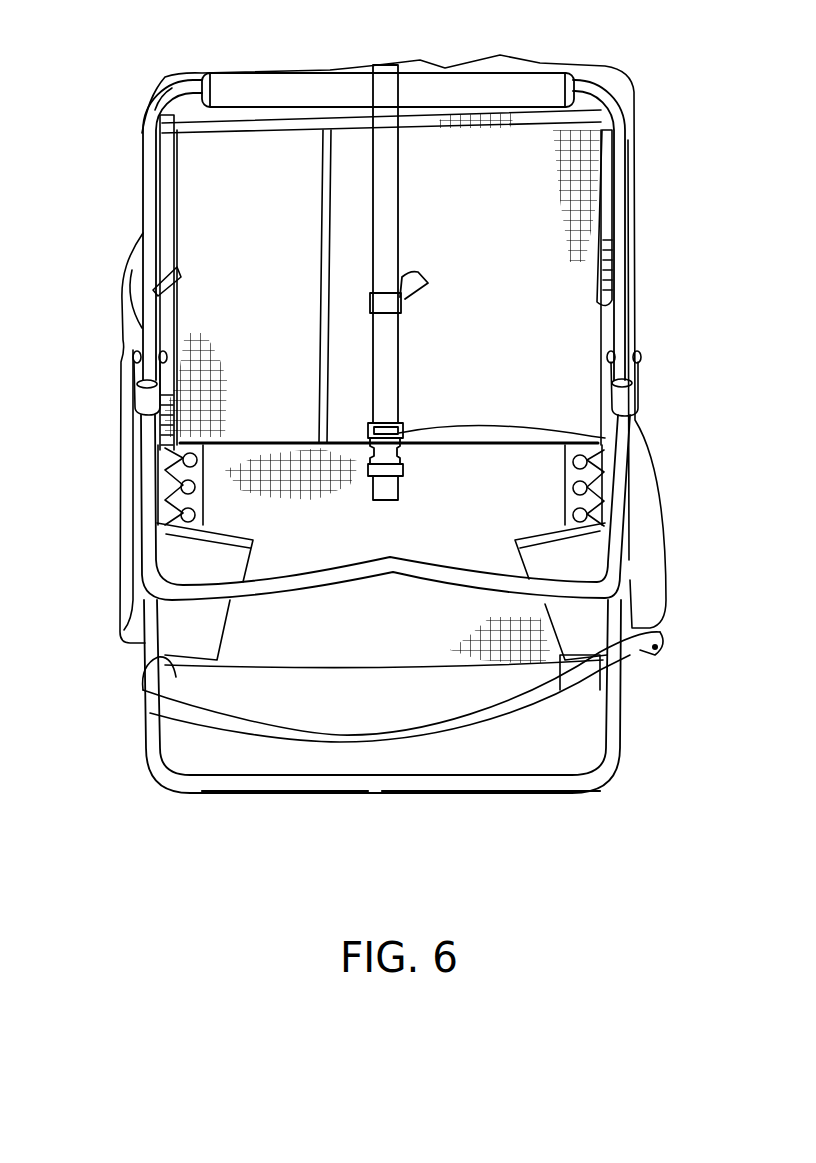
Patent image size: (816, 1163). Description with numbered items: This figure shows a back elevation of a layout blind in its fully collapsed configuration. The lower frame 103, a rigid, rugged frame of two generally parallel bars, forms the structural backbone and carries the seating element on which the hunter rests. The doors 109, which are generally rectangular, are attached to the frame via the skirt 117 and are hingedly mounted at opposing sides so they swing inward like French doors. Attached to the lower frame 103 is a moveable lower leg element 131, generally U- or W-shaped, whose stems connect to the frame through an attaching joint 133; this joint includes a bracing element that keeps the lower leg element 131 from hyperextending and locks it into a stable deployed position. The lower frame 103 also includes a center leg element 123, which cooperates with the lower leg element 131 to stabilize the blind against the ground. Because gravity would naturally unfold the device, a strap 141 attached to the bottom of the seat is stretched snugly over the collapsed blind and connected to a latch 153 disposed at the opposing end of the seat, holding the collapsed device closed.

The lower frame 103 is at (148, 190).
The doors 109 is at (276, 291).
The skirt 117 is at (237, 90).
The center leg element 123 is at (437, 784).
The lower leg element 131 is at (158, 498).
The attaching joint 133 is at (147, 405).
The strap 141 is at (388, 78).
The latch 153 is at (600, 441).